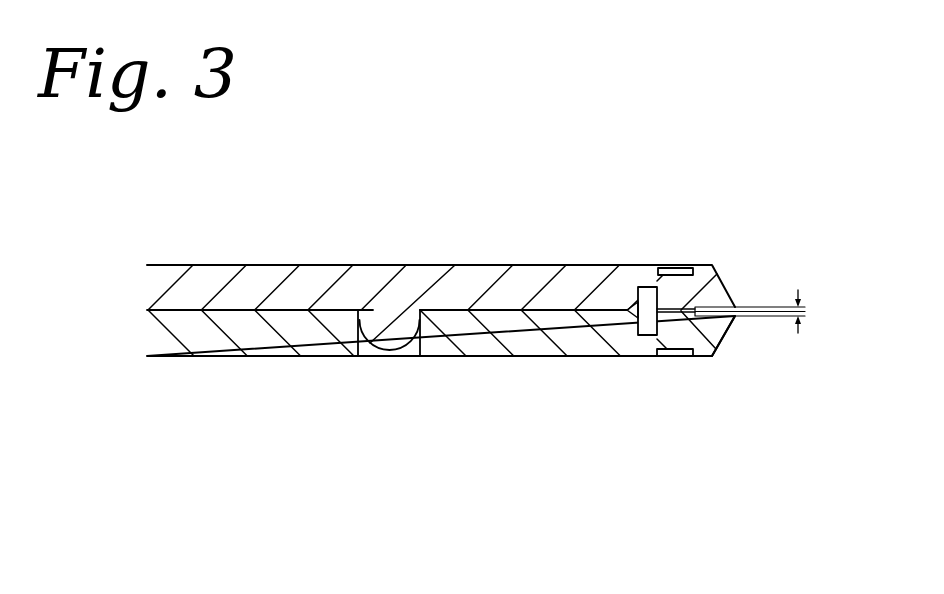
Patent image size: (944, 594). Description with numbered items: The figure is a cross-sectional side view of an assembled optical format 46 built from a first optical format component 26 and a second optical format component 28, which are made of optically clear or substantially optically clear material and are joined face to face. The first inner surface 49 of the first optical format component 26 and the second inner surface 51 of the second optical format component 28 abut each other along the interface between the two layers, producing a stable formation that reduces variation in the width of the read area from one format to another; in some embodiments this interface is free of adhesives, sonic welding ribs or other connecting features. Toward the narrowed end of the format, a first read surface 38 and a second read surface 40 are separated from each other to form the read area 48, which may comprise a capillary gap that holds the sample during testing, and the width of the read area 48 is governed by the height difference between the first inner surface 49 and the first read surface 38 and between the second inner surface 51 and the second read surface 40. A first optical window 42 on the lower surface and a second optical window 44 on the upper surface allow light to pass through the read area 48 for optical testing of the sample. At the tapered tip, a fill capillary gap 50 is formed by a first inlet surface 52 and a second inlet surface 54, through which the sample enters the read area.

The first optical format component 26 is at (165, 340).
The second optical format component 28 is at (173, 285).
The first read surface 38 is at (638, 335).
The second read surface 40 is at (678, 310).
The first optical window 42 is at (674, 357).
The second optical window 44 is at (673, 267).
The assembled optical format 46 is at (495, 204).
The read area 48 is at (677, 322).
The first inner surface 49 is at (243, 316).
The fill capillary gap 50 is at (740, 317).
The second inner surface 51 is at (224, 312).
The first inlet surface 52 is at (720, 323).
The second inlet surface 54 is at (727, 293).